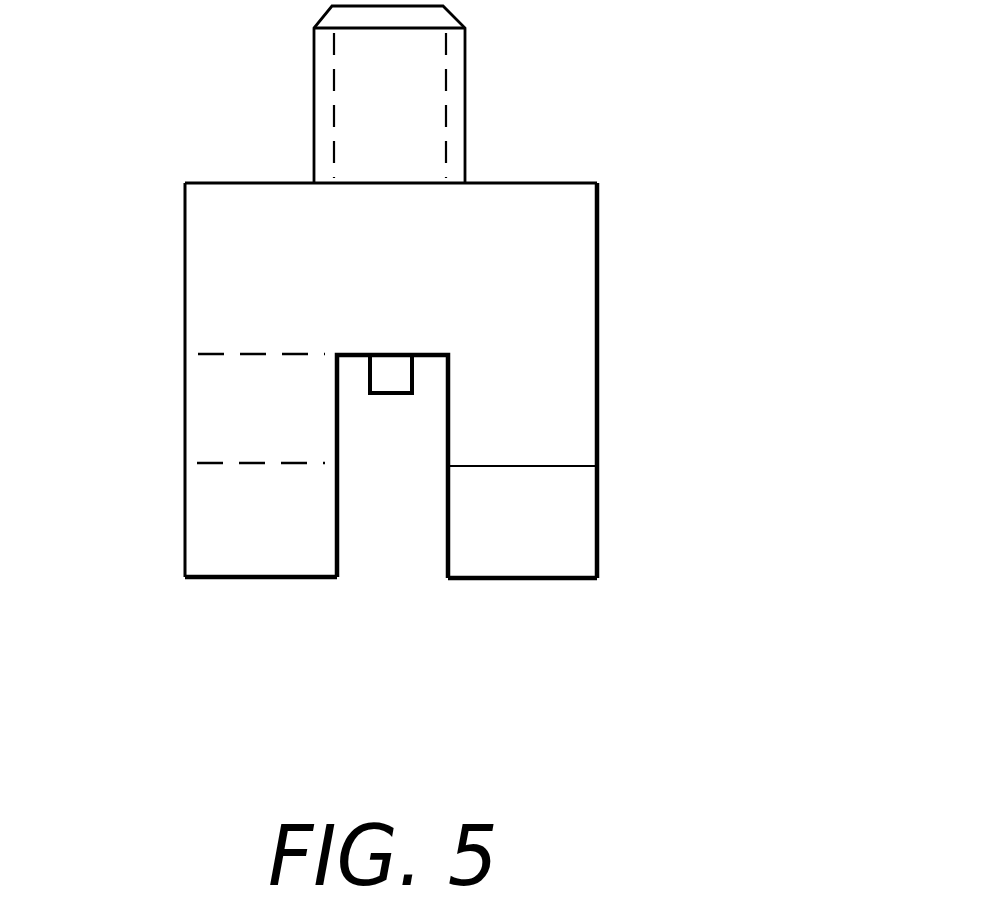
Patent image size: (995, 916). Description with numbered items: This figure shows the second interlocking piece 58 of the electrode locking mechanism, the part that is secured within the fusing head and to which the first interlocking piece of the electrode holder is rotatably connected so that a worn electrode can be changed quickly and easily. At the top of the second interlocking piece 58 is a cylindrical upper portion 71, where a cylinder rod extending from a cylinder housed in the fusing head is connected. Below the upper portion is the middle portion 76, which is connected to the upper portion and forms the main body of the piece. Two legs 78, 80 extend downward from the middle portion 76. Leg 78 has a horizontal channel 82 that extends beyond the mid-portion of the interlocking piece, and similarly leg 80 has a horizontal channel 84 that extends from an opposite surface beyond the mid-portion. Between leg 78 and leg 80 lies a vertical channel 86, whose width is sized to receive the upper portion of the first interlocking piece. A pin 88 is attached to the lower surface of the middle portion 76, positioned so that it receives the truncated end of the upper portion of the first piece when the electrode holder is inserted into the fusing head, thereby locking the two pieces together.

The second interlocking piece 58 is at (683, 163).
The cylindrical upper portion 71 is at (322, 93).
The middle portion 76 is at (232, 258).
The leg 78 is at (257, 539).
The leg 80 is at (532, 547).
The horizontal channel 82 is at (225, 399).
The horizontal channel 84 is at (553, 433).
The vertical channel 86 is at (339, 547).
The pin 88 is at (383, 378).